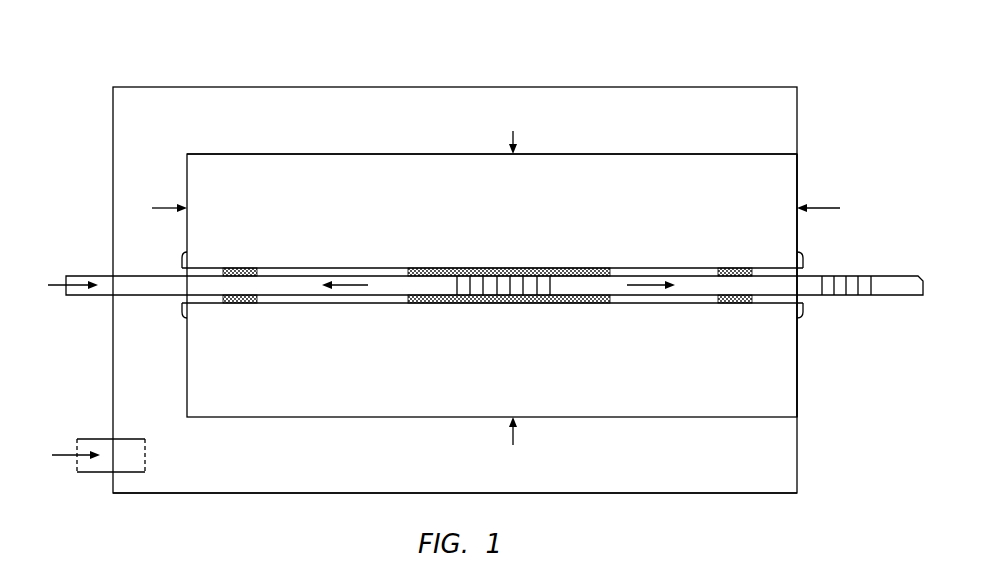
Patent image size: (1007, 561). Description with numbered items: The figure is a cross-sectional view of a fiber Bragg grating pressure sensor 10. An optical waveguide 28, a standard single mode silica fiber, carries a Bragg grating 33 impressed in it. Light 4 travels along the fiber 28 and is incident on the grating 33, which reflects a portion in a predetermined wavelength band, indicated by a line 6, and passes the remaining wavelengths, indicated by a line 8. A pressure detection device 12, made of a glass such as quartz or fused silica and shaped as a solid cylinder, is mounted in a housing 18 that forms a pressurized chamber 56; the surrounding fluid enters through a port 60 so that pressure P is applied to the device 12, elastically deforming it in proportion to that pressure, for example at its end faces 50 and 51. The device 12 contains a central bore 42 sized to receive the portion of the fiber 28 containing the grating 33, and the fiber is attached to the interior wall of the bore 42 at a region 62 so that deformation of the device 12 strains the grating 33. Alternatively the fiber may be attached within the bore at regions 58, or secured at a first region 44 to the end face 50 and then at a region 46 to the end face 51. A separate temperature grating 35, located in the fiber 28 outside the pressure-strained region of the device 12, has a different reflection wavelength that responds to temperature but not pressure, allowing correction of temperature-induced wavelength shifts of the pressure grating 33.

The fiber Bragg grating pressure sensor 10 is at (200, 82).
The housing 18 is at (335, 88).
The pressure detection device 12 is at (407, 203).
The pressurized chamber 56 is at (273, 470).
The end face 50 is at (187, 365).
The end face 51 is at (798, 182).
The light 4 is at (58, 286).
The optical waveguide 28 is at (895, 283).
The central bore 42 is at (297, 268).
The first region 44 is at (183, 308).
The region 46 is at (806, 265).
The regions 58 is at (235, 305).
The region 62 is at (418, 306).
The Bragg grating 33 is at (567, 306).
The temperature grating 35 is at (812, 306).
The reflected light 6 is at (352, 285).
The transmitted light 8 is at (643, 285).
The port 60 is at (88, 474).